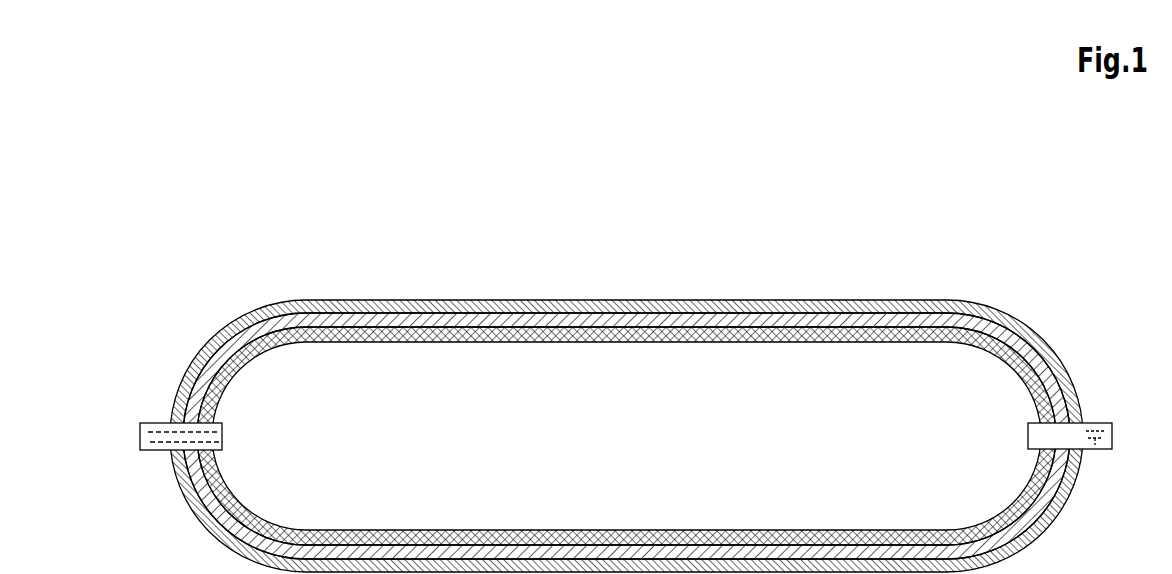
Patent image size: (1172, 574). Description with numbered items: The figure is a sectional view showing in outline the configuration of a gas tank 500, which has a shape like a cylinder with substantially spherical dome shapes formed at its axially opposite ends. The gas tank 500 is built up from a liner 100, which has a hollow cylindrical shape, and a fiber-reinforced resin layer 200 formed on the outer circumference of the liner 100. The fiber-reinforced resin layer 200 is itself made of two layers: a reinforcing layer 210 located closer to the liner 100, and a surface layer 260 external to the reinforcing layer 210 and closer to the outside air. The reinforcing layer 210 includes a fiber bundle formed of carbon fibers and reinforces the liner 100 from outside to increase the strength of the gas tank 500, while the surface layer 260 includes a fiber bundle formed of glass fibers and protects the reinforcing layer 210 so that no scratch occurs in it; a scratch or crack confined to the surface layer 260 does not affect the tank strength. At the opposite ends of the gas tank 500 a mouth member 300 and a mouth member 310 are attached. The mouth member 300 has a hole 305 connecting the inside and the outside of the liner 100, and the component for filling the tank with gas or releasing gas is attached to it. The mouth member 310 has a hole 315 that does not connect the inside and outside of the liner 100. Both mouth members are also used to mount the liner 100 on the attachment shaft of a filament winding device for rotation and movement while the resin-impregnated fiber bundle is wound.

The gas tank 500 is at (203, 268).
The fiber-reinforced resin layer 200 is at (578, 204).
The surface layer 260 is at (503, 312).
The reinforcing layer 210 is at (520, 322).
The liner 100 is at (646, 337).
The mouth member 300 is at (152, 423).
The hole 305 is at (150, 450).
The mouth member 310 is at (1090, 423).
The hole 315 is at (1090, 449).